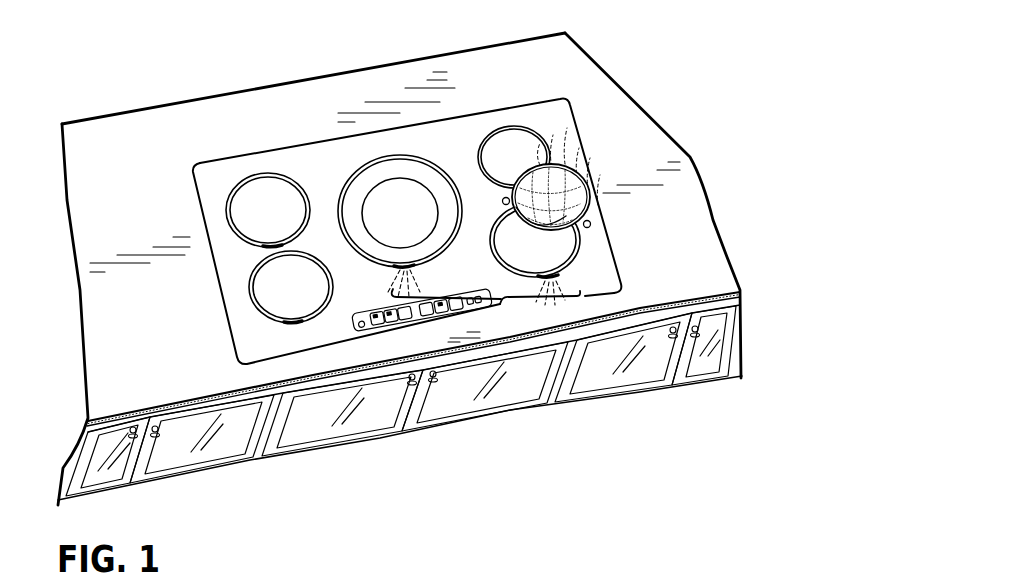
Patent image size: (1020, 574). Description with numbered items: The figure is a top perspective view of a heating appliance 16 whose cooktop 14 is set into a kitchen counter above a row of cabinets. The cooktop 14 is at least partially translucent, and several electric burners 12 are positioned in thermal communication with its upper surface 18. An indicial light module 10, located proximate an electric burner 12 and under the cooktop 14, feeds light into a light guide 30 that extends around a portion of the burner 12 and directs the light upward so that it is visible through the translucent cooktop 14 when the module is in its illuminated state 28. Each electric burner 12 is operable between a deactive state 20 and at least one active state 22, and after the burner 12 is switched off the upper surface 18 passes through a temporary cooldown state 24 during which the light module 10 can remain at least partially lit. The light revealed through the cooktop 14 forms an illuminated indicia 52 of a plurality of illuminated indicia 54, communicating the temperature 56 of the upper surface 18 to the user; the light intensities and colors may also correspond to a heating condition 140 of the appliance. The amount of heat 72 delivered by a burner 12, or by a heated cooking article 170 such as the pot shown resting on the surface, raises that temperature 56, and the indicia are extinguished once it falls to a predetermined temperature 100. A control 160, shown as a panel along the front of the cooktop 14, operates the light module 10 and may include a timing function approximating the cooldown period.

The indicial light module 10 is at (225, 158).
The electric burner 12 is at (268, 196).
The cooktop 14 is at (567, 125).
The heating appliance 16 is at (565, 92).
The upper surface 18 is at (455, 281).
The deactive state 20 is at (240, 288).
The active state 22 is at (597, 242).
The cooldown state 24 is at (402, 194).
The illuminated state 28 is at (550, 306).
The light guide 30 is at (277, 243).
The illuminated indicia 52 is at (362, 182).
The plurality of illuminated indicia 54 is at (503, 306).
The temperature 56 is at (577, 262).
The heat 72 is at (390, 277).
The predetermined temperature 100 is at (270, 291).
The heating condition 140 is at (600, 289).
The control 160 is at (383, 334).
The cooking article 170 is at (520, 238).